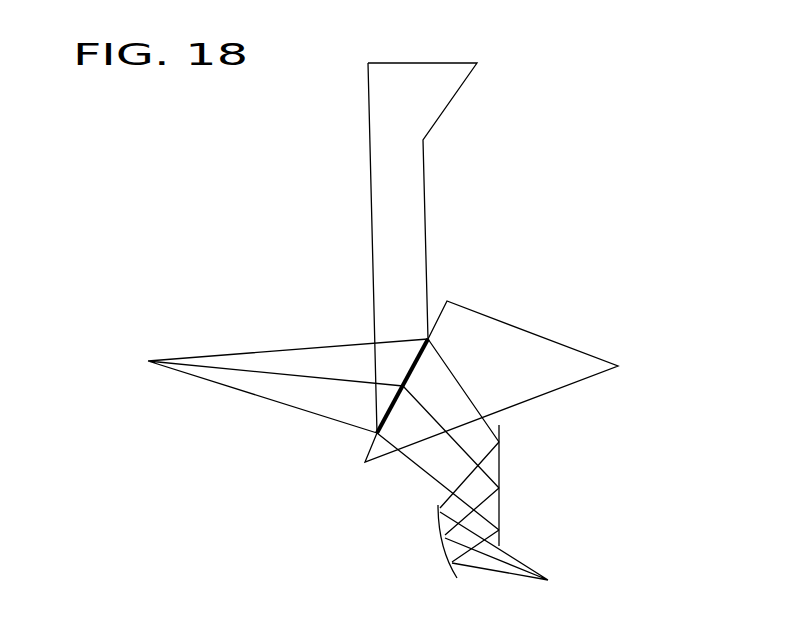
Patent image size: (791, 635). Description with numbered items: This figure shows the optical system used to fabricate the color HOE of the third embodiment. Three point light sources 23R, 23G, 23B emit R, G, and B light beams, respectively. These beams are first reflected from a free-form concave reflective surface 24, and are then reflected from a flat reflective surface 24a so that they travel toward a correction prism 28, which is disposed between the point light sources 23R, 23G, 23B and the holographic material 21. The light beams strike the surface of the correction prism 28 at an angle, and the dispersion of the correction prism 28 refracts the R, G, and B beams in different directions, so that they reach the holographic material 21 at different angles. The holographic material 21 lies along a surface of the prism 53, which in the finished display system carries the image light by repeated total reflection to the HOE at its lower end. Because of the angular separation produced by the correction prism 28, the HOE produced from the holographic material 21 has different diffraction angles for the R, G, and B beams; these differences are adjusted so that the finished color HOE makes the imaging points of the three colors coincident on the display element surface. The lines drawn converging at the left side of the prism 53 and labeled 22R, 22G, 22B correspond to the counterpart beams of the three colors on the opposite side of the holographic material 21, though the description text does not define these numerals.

The prism 53 is at (424, 183).
The correction prism 28 is at (552, 395).
The holographic material 21 is at (375, 429).
The red light source 22R is at (228, 386).
The green light source 22G is at (228, 386).
The blue light source 22B is at (148, 361).
The flat reflective surface 24a is at (500, 467).
The free-form concave reflective surface 24 is at (440, 537).
The point light source 23R is at (576, 546).
The point light source 23G is at (576, 546).
The point light source 23B is at (550, 580).